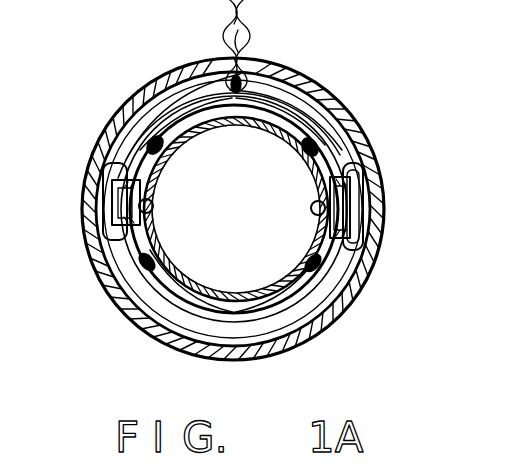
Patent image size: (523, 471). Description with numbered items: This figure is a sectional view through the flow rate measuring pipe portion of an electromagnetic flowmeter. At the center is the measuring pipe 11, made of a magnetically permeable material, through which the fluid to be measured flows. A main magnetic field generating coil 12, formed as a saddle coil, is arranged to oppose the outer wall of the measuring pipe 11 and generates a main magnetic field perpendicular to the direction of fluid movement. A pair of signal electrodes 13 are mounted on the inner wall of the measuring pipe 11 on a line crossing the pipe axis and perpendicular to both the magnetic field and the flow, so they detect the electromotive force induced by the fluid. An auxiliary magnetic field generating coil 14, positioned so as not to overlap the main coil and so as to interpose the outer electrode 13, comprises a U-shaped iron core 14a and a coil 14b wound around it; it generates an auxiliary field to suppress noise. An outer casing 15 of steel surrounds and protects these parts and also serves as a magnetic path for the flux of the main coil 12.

The measuring pipe 11 is at (238, 298).
The main magnetic field generating coil 12 is at (308, 97).
The signal electrodes 13 is at (153, 204).
The auxiliary magnetic field generating coil 14 is at (120, 263).
The U-shaped iron core 14a is at (350, 217).
The coil 14b is at (358, 254).
The outer casing 15 is at (362, 124).